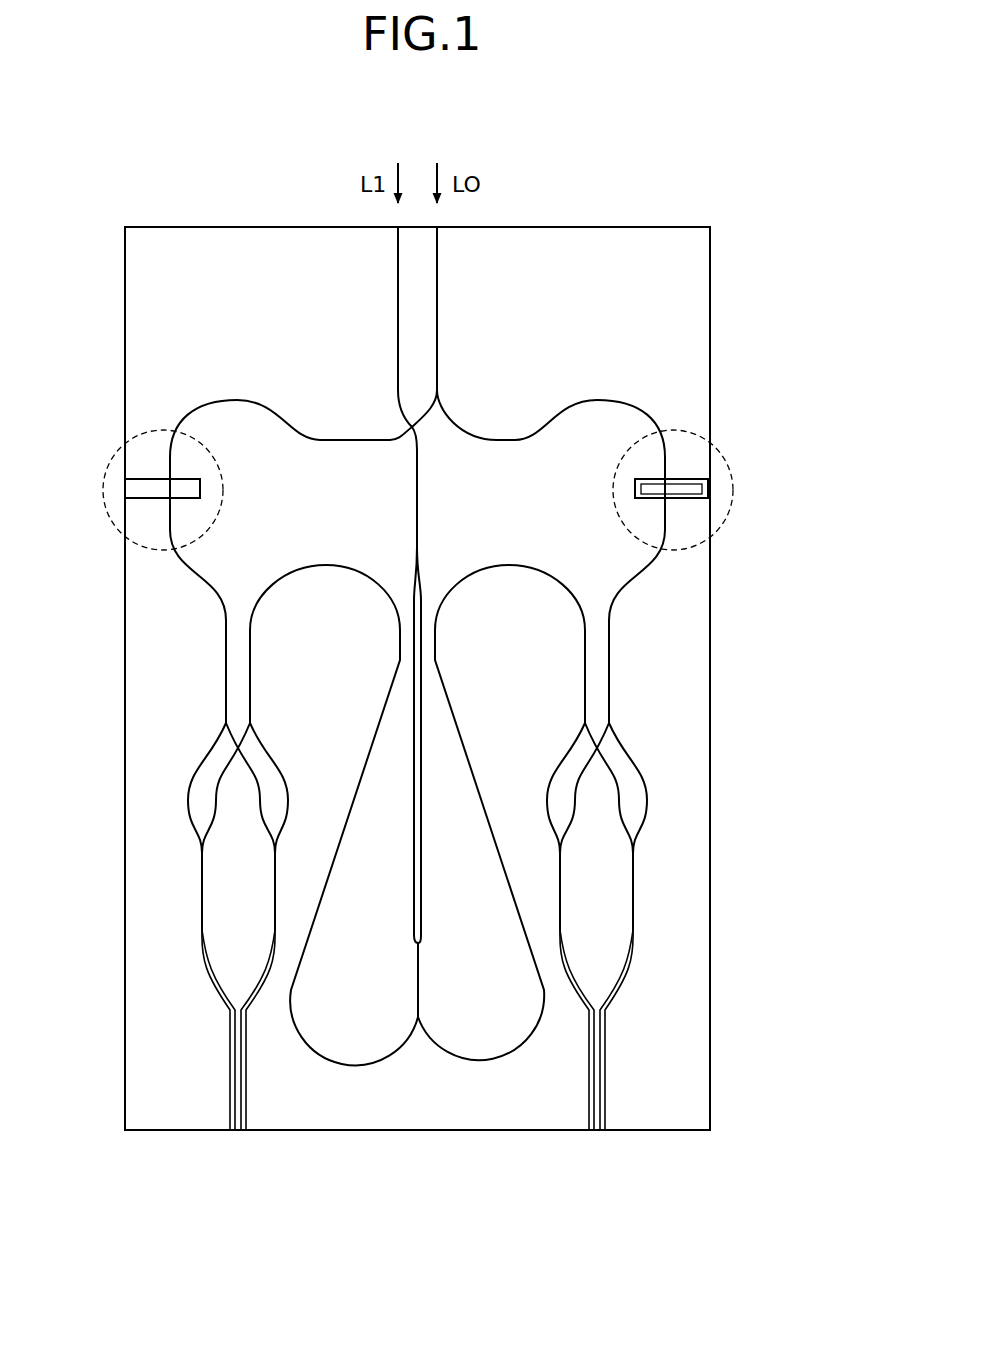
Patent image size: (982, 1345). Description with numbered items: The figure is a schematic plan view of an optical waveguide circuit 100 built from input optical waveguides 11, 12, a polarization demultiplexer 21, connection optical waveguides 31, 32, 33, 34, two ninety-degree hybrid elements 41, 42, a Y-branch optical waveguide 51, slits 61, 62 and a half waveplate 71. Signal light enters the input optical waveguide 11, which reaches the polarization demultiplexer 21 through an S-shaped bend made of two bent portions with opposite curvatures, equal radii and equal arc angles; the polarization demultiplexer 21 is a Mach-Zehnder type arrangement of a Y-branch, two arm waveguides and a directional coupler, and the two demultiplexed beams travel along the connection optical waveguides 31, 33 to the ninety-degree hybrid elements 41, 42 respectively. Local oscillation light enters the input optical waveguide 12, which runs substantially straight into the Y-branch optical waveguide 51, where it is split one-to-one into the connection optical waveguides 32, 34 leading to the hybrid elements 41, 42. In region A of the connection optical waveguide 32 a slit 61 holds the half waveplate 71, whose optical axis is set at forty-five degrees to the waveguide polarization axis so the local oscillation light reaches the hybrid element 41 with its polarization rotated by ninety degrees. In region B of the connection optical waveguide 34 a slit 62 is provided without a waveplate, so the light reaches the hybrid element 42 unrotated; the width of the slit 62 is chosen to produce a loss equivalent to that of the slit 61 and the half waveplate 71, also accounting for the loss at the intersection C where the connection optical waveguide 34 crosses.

The optical waveguide circuit 100 is at (744, 147).
The input optical waveguide 11 is at (398, 285).
The input optical waveguide 12 is at (437, 285).
The polarization demultiplexer 21 is at (436, 557).
The connection optical waveguide 31 is at (471, 815).
The connection optical waveguide 32 is at (632, 393).
The connection optical waveguide 33 is at (364, 815).
The connection optical waveguide 34 is at (203, 393).
The 90-degree hybrid element 41 is at (638, 725).
The 90-degree hybrid element 42 is at (198, 725).
The Y-branch optical waveguide 51 is at (470, 378).
The slit 61 is at (690, 497).
The slit 62 is at (150, 495).
The half waveplate 71 is at (686, 487).
The region A is at (710, 440).
The region B is at (125, 440).
The intersection C is at (404, 421).